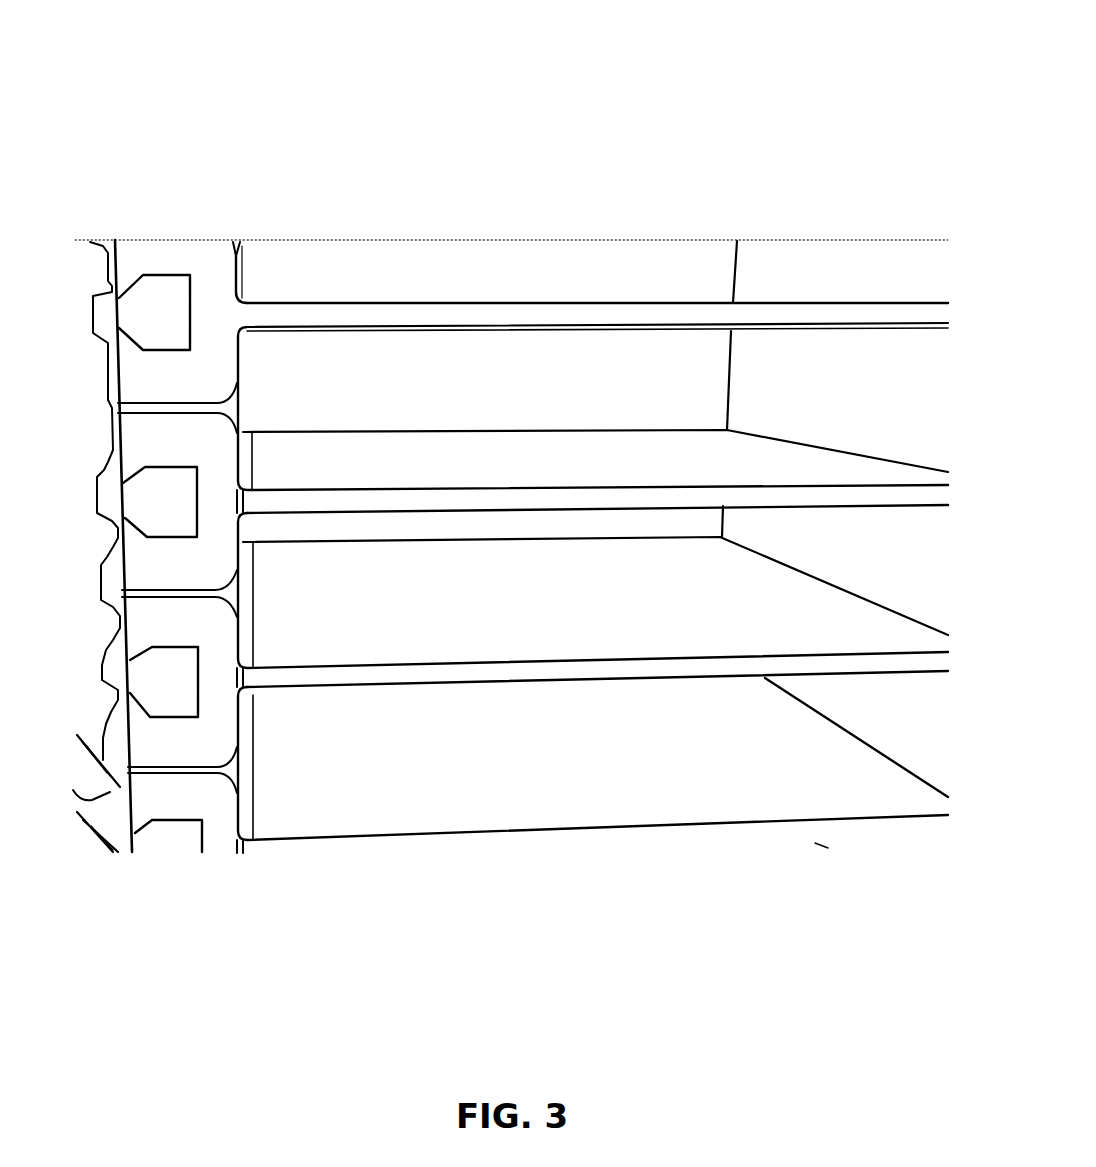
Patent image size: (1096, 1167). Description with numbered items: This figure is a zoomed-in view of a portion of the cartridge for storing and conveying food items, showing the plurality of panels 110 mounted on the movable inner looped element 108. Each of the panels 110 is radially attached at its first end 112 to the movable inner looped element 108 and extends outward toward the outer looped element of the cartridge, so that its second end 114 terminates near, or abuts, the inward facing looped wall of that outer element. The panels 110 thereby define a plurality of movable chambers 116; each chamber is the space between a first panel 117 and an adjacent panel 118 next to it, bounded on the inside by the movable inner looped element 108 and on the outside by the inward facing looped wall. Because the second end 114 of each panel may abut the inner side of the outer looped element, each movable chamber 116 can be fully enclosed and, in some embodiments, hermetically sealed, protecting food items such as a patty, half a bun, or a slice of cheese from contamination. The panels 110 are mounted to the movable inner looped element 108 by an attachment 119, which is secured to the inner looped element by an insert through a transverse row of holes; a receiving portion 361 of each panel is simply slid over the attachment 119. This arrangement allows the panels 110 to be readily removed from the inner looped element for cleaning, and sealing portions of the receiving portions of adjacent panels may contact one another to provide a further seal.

The plurality of panels 110 is at (255, 126).
The movable inner looped element 108 is at (118, 843).
The first end 112 is at (316, 876).
The second end 114 is at (920, 858).
The movable chambers 116 is at (410, 358).
The first panel 117 is at (482, 305).
The adjacent panel 118 is at (543, 498).
The attachment 119 is at (162, 325).
The receiving portion 361 is at (138, 445).